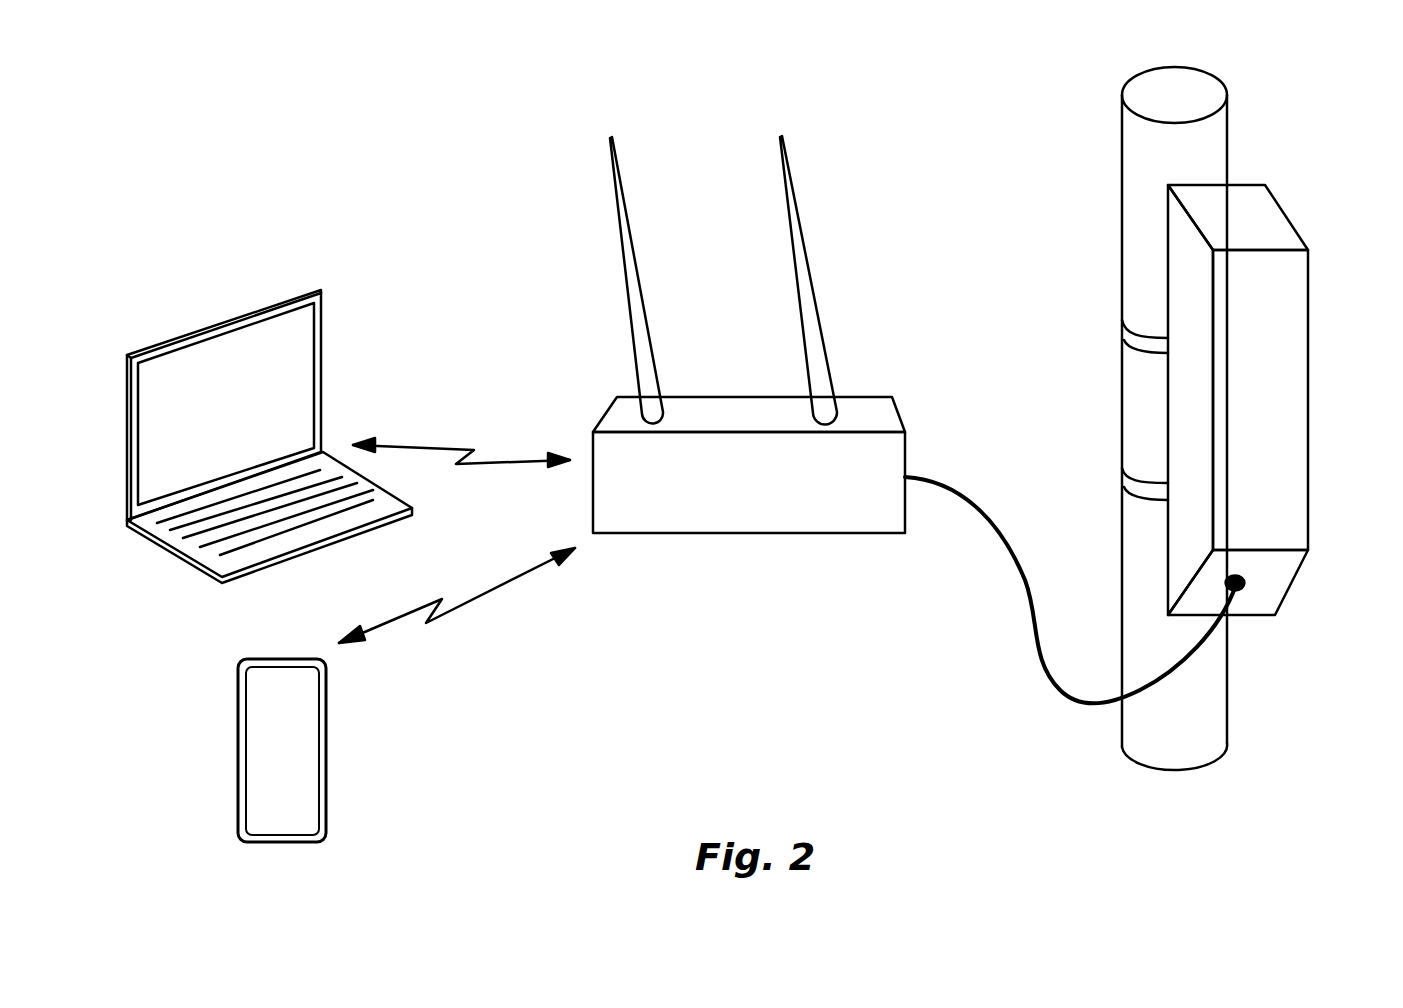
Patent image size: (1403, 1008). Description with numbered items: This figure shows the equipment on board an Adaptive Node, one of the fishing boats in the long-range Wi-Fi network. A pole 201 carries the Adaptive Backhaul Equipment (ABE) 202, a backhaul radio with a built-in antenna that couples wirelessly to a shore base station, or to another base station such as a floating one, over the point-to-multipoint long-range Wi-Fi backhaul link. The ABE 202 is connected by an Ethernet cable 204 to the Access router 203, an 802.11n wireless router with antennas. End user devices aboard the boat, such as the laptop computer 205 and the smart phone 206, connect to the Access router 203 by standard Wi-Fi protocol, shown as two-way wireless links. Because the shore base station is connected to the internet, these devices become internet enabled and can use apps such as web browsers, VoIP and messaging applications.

The pole 201 is at (1133, 205).
The Adaptive Backhaul Equipment (ABE) 202 is at (1283, 308).
The Access router 203 is at (862, 395).
The Ethernet cable 204 is at (1028, 638).
The laptop computer 205 is at (258, 293).
The smart phone 206 is at (320, 773).